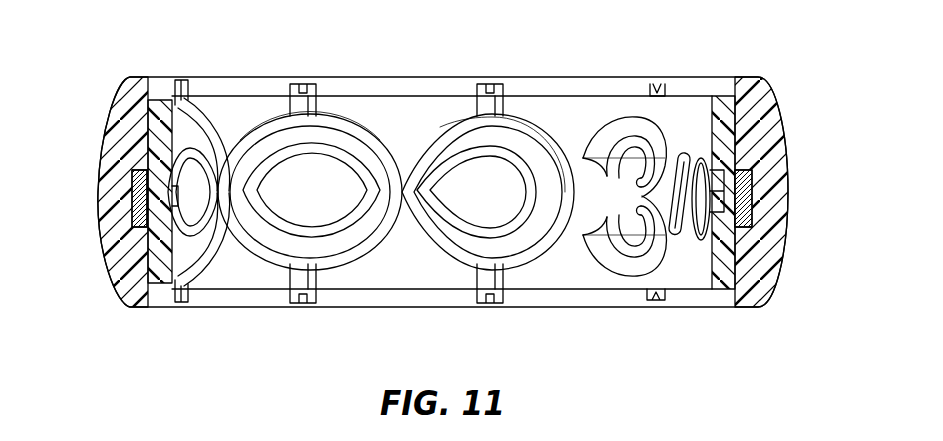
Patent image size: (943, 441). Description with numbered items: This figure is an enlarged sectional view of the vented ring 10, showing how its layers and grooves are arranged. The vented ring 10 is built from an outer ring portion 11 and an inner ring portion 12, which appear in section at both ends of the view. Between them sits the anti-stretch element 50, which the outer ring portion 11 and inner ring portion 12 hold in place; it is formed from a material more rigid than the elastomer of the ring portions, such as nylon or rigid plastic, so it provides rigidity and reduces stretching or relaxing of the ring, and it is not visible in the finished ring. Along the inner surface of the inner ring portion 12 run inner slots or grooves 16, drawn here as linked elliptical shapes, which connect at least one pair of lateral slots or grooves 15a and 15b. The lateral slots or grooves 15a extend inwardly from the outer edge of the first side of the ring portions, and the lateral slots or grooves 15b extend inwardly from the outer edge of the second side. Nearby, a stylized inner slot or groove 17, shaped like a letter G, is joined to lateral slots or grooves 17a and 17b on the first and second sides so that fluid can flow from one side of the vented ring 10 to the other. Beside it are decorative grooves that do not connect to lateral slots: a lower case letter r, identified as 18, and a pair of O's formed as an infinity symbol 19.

The vented ring 10 is at (88, 74).
The outer ring portion 11 is at (112, 135).
The inner ring portion 12 is at (164, 133).
The lateral slots or grooves 15a is at (183, 96).
The lateral slots or grooves 15b is at (181, 302).
The inner slots or grooves 16 is at (447, 150).
The stylized inner slot or groove 17 is at (628, 135).
The lateral slots or grooves 17a is at (657, 92).
The lateral slots or grooves 17b is at (656, 301).
The decorative slot or groove 18 is at (688, 165).
The infinity symbol 19 is at (700, 242).
The anti-stretch element 50 is at (130, 183).